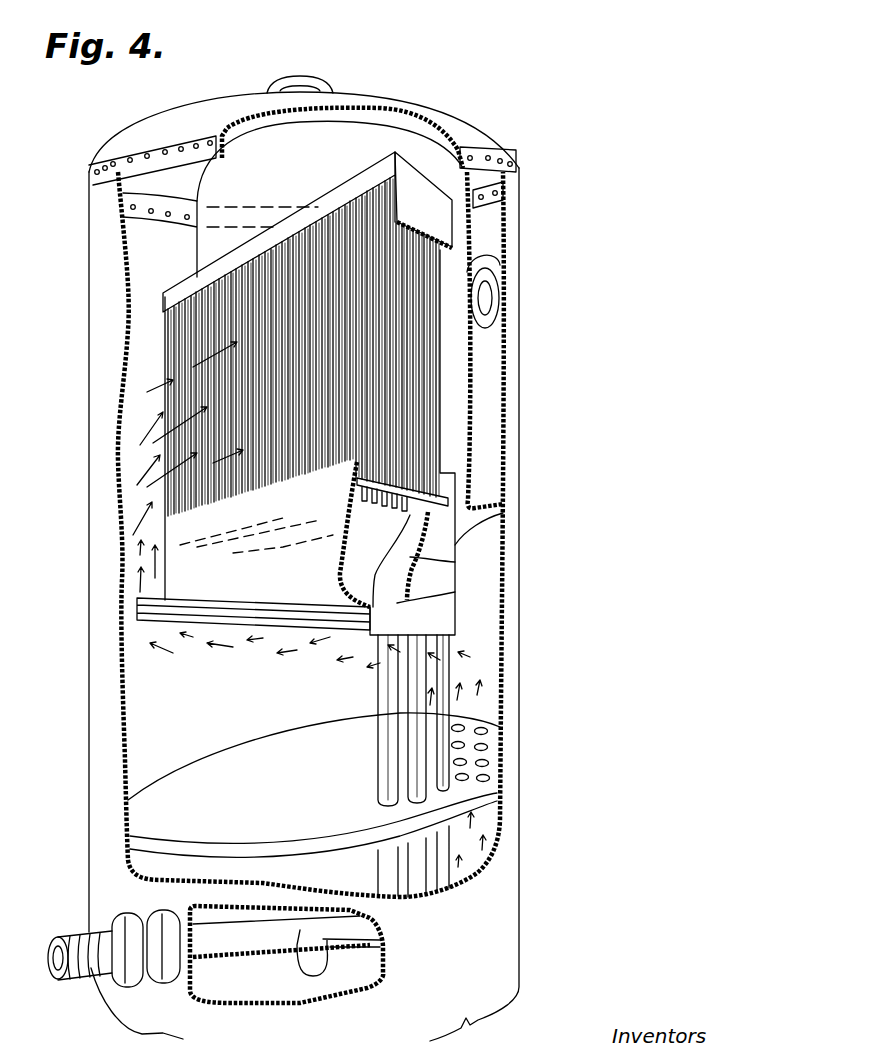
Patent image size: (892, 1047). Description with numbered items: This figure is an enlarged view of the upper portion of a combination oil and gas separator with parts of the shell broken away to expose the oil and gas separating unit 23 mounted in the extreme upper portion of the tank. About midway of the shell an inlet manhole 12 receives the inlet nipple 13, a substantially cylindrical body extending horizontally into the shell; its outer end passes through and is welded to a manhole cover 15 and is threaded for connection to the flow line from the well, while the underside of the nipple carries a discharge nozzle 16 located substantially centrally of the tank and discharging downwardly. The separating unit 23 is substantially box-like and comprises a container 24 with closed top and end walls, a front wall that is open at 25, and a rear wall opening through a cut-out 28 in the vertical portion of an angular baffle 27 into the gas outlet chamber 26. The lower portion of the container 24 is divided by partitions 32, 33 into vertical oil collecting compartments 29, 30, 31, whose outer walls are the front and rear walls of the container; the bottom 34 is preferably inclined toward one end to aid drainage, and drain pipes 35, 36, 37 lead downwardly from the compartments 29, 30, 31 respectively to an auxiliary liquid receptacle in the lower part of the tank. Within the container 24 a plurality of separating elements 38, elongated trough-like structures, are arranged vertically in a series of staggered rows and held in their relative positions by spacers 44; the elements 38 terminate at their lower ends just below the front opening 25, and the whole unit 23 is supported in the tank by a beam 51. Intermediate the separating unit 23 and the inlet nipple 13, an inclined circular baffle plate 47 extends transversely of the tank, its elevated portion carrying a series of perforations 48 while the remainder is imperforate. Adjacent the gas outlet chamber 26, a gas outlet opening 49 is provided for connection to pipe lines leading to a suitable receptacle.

The inlet manhole 12 is at (152, 912).
The inlet nipple 13 is at (257, 940).
The manhole cover 15 is at (125, 978).
The discharge nozzle 16 is at (377, 980).
The oil and gas separating unit 23 is at (153, 358).
The container 24 is at (438, 210).
The open front wall 25 is at (326, 214).
The gas outlet chamber 26 is at (490, 410).
The angular baffle 27 is at (468, 477).
The cut-out 28 is at (450, 364).
The oil collecting compartment 29 is at (355, 534).
The oil collecting compartment 30 is at (400, 559).
The oil collecting compartment 31 is at (426, 587).
The partition 32 is at (400, 556).
The partition 33 is at (458, 562).
The bottom 34 is at (273, 632).
The drain pipe 35 is at (383, 687).
The drain pipe 36 is at (417, 717).
The drain pipe 37 is at (447, 683).
The separating elements 38 is at (263, 300).
The spacers 44 is at (450, 501).
The inclined circular baffle plate 47 is at (170, 790).
The perforations 48 is at (500, 765).
The gas outlet opening 49 is at (485, 300).
The beam 51 is at (244, 604).